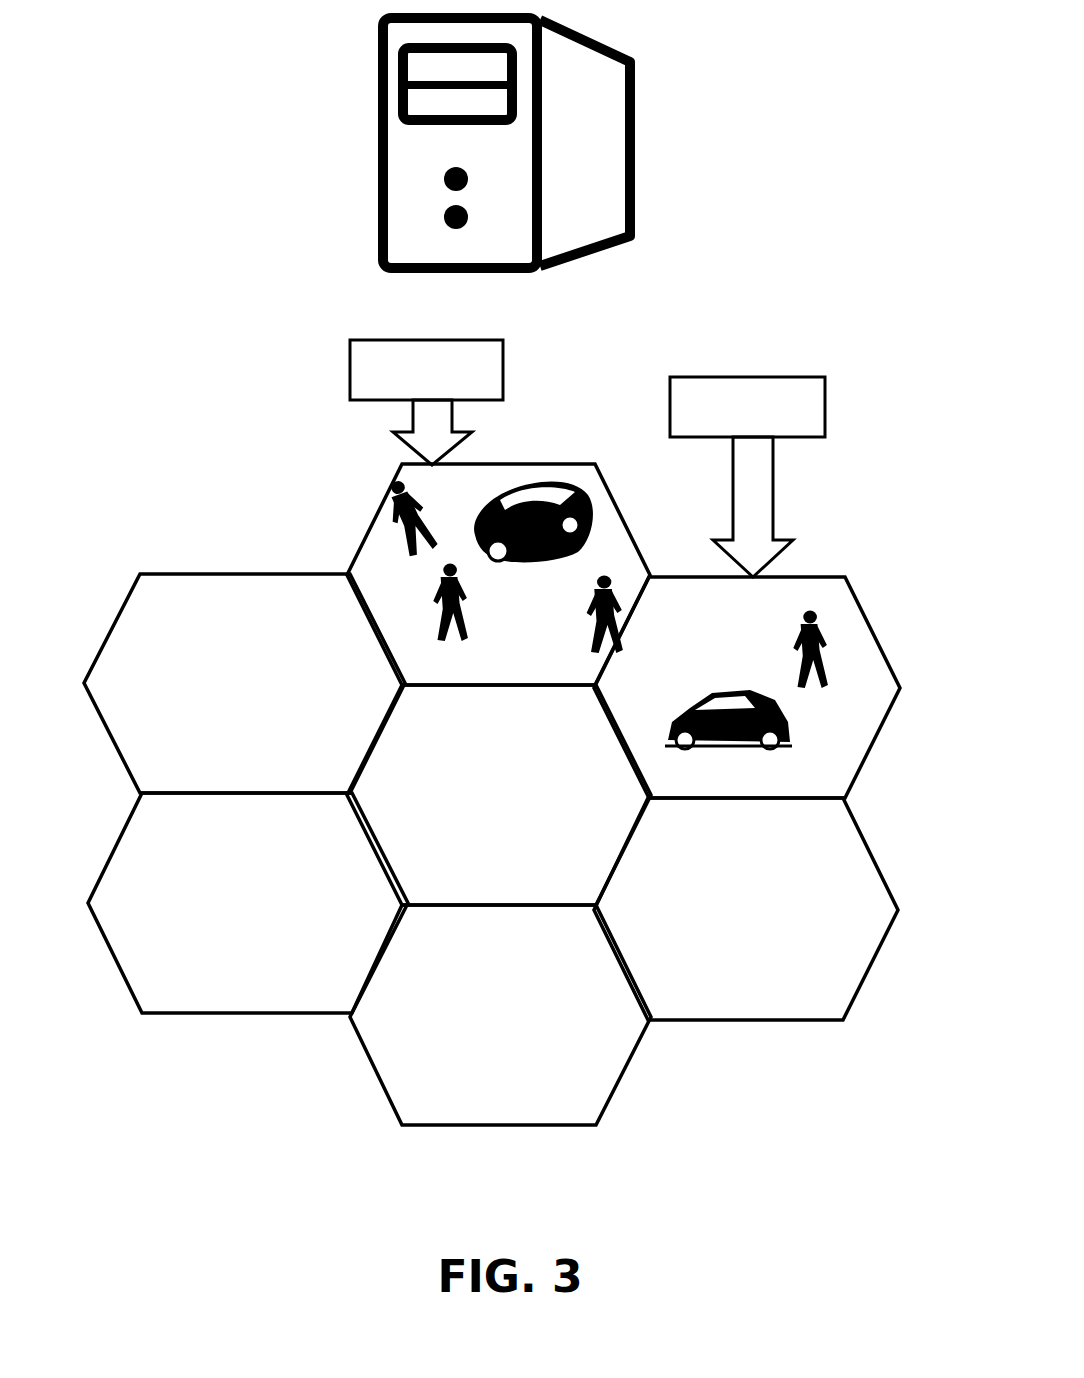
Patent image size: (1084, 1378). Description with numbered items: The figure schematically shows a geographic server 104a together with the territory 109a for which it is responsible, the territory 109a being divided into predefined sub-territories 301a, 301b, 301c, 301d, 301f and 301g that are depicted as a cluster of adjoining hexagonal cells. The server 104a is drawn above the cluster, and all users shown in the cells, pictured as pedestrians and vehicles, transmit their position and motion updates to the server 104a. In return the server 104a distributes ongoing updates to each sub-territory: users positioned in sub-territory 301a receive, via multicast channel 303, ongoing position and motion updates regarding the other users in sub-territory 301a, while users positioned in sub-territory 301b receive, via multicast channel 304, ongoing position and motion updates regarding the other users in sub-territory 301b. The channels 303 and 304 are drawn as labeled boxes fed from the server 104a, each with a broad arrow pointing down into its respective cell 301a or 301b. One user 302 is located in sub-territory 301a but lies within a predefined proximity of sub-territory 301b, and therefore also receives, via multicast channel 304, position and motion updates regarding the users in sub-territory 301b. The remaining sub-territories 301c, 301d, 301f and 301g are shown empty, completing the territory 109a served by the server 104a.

The geographic server 104a is at (380, 174).
The multicast channel 303 is at (507, 272).
The multicast channel 304 is at (507, 290).
The sub-territory 301a is at (367, 542).
The sub-territory 301b is at (861, 612).
The sub-territory 301c is at (881, 877).
The sub-territory 301d is at (193, 1015).
The sub-territory 301f is at (129, 590).
The sub-territory 301g is at (397, 748).
The user 302 is at (588, 618).
The territory 109a is at (826, 1143).